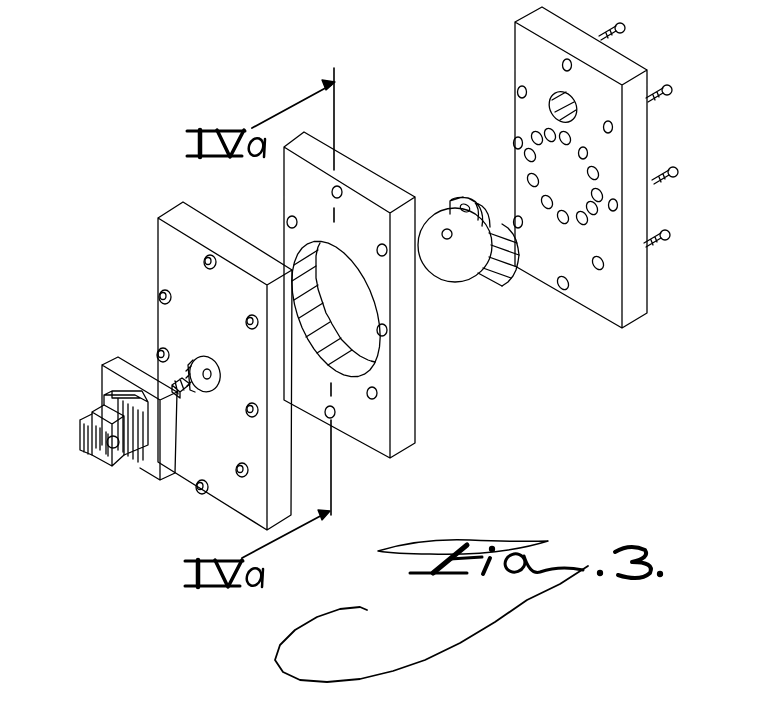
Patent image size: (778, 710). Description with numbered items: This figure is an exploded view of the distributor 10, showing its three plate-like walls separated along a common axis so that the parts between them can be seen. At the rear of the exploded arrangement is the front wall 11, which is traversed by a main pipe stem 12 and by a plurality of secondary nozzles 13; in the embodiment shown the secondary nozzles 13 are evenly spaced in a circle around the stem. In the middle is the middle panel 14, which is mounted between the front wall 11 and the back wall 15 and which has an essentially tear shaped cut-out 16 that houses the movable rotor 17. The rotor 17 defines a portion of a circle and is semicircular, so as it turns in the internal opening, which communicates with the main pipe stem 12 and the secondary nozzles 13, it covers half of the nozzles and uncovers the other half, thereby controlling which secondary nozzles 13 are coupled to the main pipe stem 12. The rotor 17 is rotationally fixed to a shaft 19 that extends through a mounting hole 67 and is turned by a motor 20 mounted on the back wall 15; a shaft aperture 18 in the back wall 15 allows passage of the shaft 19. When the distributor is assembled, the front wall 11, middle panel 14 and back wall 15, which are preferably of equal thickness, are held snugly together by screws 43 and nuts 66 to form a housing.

The distributor 10 is at (150, 80).
The front wall 11 is at (640, 135).
The main pipe stem 12 is at (557, 98).
The secondary nozzles 13 is at (526, 155).
The middle panel 14 is at (408, 427).
The back wall 15 is at (166, 210).
The tear shaped cut-out 16 is at (347, 305).
The rotor 17 is at (462, 283).
The shaft aperture 18 is at (203, 362).
The shaft 19 is at (182, 397).
The motor 20 is at (117, 361).
The screws 43 is at (619, 34).
The nuts 66 is at (160, 296).
The mounting hole 67 is at (447, 241).